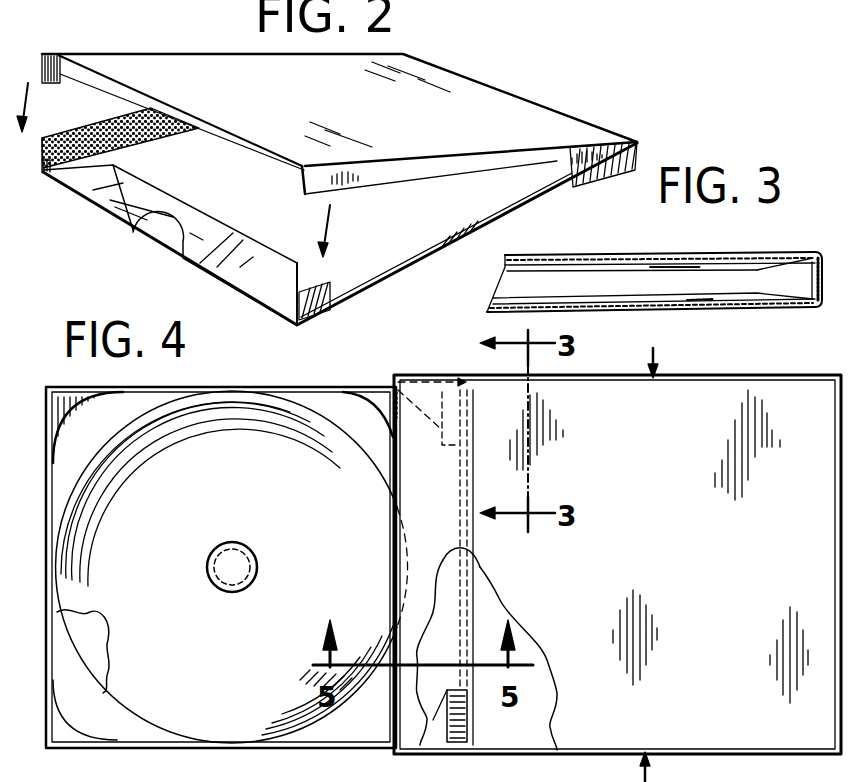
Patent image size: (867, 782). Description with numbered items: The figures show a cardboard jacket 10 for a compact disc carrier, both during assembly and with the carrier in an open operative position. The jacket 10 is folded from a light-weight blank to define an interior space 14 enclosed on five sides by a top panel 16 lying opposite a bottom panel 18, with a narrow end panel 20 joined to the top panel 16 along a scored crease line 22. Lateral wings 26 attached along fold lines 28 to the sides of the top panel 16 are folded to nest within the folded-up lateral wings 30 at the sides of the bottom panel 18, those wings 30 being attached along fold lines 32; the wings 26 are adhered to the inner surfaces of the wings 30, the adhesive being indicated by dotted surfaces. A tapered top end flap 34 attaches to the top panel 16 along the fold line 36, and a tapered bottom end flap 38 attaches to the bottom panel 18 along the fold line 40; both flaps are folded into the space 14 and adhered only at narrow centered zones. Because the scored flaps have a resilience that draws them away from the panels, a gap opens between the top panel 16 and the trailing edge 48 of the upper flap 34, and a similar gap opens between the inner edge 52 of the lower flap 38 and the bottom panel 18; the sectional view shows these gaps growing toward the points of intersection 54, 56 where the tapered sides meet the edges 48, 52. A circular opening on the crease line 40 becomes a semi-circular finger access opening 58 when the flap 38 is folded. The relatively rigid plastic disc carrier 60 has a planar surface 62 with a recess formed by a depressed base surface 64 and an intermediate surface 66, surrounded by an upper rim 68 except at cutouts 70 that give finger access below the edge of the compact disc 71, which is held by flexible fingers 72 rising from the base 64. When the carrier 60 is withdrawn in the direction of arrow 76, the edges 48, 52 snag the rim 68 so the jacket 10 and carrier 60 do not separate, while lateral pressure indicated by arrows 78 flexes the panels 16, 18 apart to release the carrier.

In FIG. 2, the jacket 10 is at (520, 93).
In FIG. 4, the interior space 14 is at (533, 703).
In FIG. 2, the top panel 16 is at (358, 114).
In FIG. 3, the top panel 16 is at (660, 255).
In FIG. 4, the top panel 16 is at (672, 553).
In FIG. 2, the bottom panel 18 is at (393, 220).
In FIG. 3, the bottom panel 18 is at (707, 310).
In FIG. 4, the bottom panel 18 is at (533, 730).
In FIG. 4, the end panel 20 is at (840, 525).
In FIG. 2, the crease or fold line 22 is at (570, 115).
In FIG. 2, the lateral wing 26 is at (50, 54).
In FIG. 3, the lateral wing 26 is at (823, 293).
In FIG. 4, the lateral wing 26 is at (573, 748).
In FIG. 2, the crease or fold line 28 is at (425, 155).
In FIG. 3, the crease or fold line 28 is at (813, 255).
In FIG. 2, the lateral wing 30 is at (90, 133).
In FIG. 3, the lateral wing 30 is at (823, 273).
In FIG. 4, the lateral wing 30 is at (672, 373).
In FIG. 2, the crease or fold line 32 is at (163, 135).
In FIG. 3, the crease or fold line 32 is at (813, 317).
In FIG. 3, the tapered top end flap 34 is at (582, 268).
In FIG. 4, the tapered top end flap 34 is at (497, 603).
In FIG. 2, the fold or crease line 36 is at (258, 147).
In FIG. 4, the fold or crease line 36 is at (390, 507).
In FIG. 2, the tapered bottom end flap 38 is at (110, 200).
In FIG. 2, the fold or crease line 40 is at (213, 277).
In FIG. 3, the trailing edge 48 is at (527, 268).
In FIG. 3, the inner edge 52 is at (597, 300).
In FIG. 3, the point of intersection 54 is at (757, 270).
In FIG. 4, the point of intersection 54 is at (467, 437).
In FIG. 2, the point of intersection 56 is at (140, 123).
In FIG. 3, the point of intersection 56 is at (753, 313).
In FIG. 2, the semi-circular finger access opening 58 is at (160, 230).
In FIG. 4, the disc carrier 60 is at (65, 383).
In FIG. 4, the planar surface 62 is at (53, 435).
In FIG. 4, the depressed base surface 64 is at (83, 630).
In FIG. 4, the intermediate surface 66 is at (343, 393).
In FIG. 4, the upper rim 68 is at (373, 383).
In FIG. 4, the cutout 70 is at (187, 390).
In FIG. 4, the compact disc 71 is at (182, 488).
In FIG. 4, the flexible finger 72 is at (257, 556).
In FIG. 4, the arrow 76 is at (207, 772).
In FIG. 4, the arrow 78 is at (651, 352).